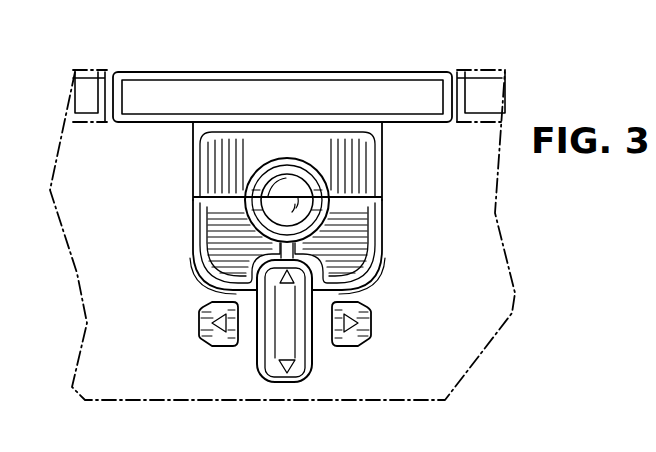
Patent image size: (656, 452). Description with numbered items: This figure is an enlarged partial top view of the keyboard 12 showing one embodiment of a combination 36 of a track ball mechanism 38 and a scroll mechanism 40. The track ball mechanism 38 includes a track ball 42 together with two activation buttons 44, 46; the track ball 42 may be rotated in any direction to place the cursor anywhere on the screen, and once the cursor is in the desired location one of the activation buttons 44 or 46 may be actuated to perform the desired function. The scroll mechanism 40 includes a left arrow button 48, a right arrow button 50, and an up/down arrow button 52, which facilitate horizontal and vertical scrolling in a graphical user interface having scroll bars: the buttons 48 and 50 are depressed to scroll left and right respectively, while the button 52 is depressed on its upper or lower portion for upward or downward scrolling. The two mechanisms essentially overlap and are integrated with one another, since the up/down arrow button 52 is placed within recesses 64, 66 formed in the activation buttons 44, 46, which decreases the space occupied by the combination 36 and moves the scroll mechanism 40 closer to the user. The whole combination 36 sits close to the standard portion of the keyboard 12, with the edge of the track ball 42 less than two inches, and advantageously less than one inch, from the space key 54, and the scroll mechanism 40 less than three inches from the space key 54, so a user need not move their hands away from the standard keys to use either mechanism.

The keyboard 12 is at (88, 178).
The combination 36 is at (117, 368).
The track ball mechanism 38 is at (188, 199).
The scroll mechanism 40 is at (247, 376).
The track ball 42 is at (293, 187).
The activation button 44 is at (198, 241).
The activation button 46 is at (380, 232).
The left arrow button 48 is at (207, 338).
The right arrow button 50 is at (360, 334).
The up/down arrow button 52 is at (300, 382).
The space key 54 is at (391, 82).
The recess 64 is at (205, 293).
The recess 66 is at (340, 293).